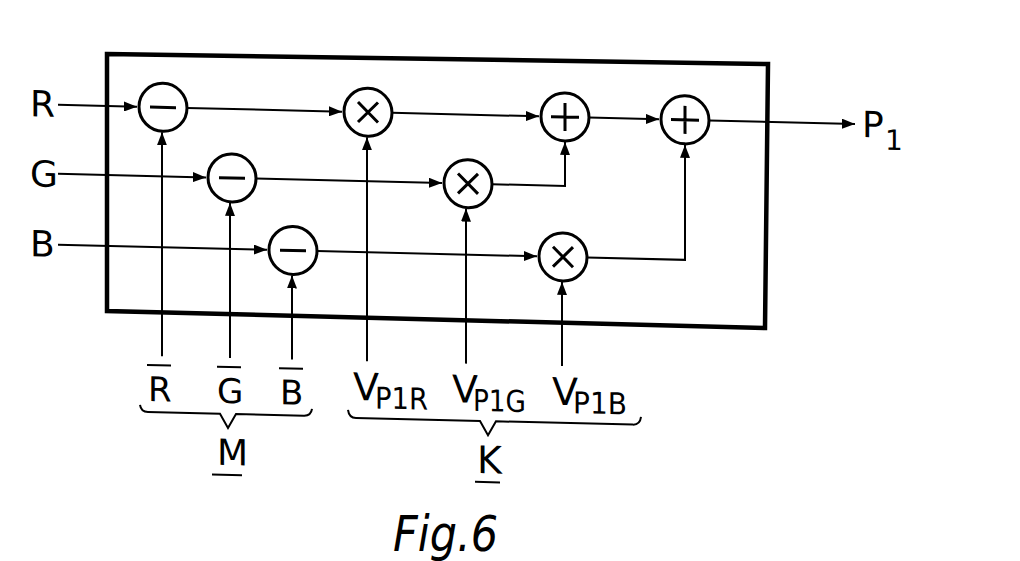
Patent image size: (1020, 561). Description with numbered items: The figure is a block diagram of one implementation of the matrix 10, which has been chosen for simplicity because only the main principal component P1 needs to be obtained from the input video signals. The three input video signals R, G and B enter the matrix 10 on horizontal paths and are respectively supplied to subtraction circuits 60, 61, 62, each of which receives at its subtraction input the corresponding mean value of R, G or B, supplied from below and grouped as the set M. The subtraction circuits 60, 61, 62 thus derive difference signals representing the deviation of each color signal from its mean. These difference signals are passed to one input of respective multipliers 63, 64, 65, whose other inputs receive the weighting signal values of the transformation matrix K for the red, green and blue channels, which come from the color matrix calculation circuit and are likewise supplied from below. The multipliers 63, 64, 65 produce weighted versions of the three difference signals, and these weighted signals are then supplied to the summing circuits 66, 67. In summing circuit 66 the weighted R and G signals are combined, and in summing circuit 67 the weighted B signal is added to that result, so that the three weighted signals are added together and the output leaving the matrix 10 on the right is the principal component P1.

The matrix 10 is at (753, 0).
The subtraction circuit 60 is at (182, 92).
The subtraction circuit 61 is at (247, 157).
The subtraction circuit 62 is at (297, 222).
The multiplier 63 is at (386, 90).
The multiplier 64 is at (448, 157).
The multiplier 65 is at (582, 226).
The summing circuit 66 is at (583, 90).
The summing circuit 67 is at (705, 124).